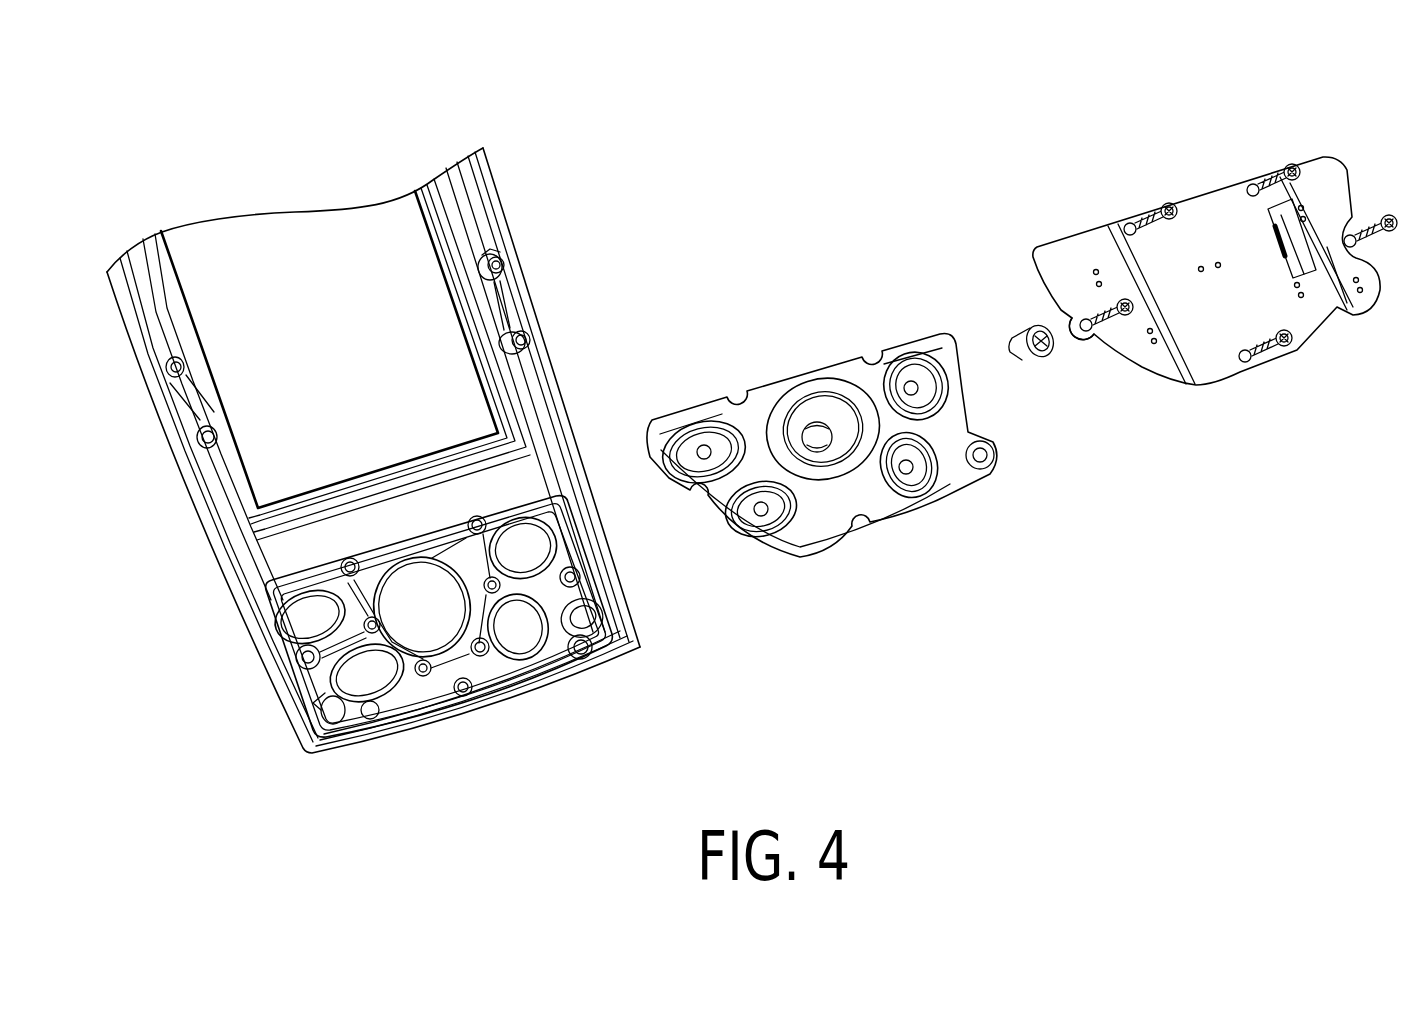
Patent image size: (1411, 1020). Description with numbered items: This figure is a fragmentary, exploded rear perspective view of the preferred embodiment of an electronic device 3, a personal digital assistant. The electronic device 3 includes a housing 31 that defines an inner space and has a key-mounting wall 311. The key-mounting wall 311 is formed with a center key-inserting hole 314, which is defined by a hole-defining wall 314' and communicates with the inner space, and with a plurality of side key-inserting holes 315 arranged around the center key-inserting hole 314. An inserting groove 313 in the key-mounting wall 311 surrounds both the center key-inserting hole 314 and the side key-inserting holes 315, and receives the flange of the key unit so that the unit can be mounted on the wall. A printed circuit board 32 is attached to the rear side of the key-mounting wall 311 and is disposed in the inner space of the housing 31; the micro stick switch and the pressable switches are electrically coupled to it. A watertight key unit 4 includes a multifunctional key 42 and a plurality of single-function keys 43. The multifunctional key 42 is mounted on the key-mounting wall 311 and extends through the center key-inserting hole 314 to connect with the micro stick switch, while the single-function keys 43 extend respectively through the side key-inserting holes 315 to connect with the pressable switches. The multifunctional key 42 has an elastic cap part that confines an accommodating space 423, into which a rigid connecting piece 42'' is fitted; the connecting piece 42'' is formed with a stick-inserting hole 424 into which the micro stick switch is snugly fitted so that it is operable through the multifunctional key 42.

The electronic device 3 is at (502, 190).
The housing 31 is at (517, 213).
The key-mounting wall 311 is at (527, 477).
The inserting groove 313 is at (285, 558).
The center key-inserting hole 314 is at (238, 632).
The hole-defining wall 314' is at (398, 725).
The side key-inserting holes 315 is at (282, 604).
The watertight key unit 4 is at (893, 337).
The multifunctional key 42 is at (822, 365).
The accommodating space 423 is at (824, 445).
The stick-inserting hole 424 is at (1074, 338).
The connecting piece 42'' is at (1047, 403).
The single-function keys 43 is at (713, 435).
The printed circuit board 32 is at (1325, 183).